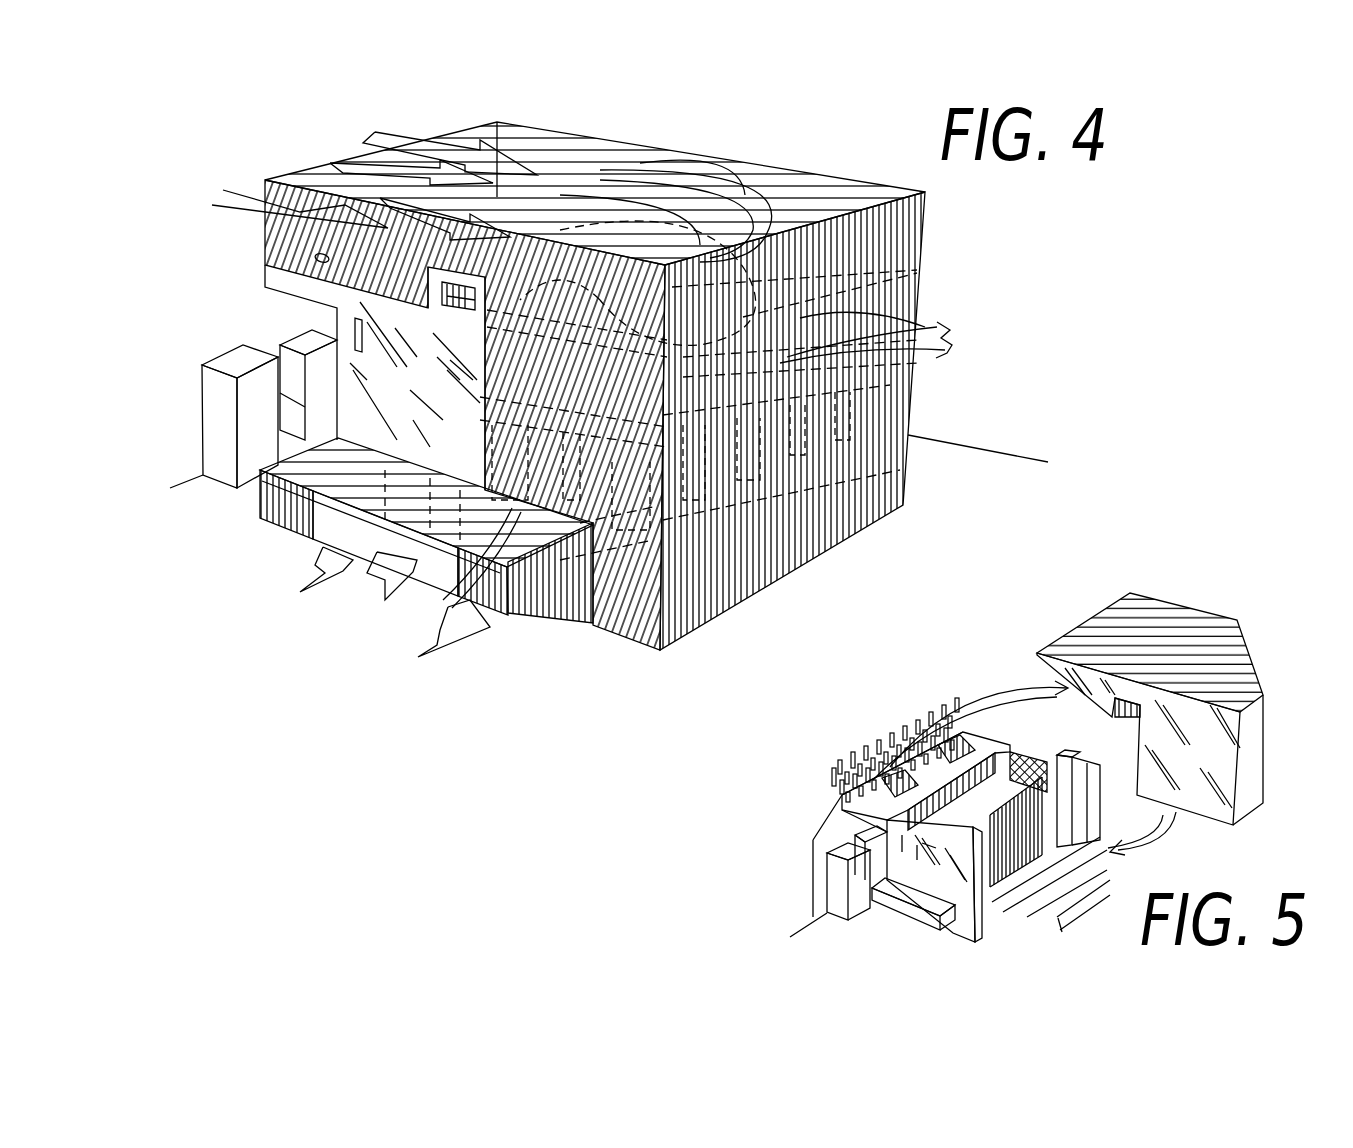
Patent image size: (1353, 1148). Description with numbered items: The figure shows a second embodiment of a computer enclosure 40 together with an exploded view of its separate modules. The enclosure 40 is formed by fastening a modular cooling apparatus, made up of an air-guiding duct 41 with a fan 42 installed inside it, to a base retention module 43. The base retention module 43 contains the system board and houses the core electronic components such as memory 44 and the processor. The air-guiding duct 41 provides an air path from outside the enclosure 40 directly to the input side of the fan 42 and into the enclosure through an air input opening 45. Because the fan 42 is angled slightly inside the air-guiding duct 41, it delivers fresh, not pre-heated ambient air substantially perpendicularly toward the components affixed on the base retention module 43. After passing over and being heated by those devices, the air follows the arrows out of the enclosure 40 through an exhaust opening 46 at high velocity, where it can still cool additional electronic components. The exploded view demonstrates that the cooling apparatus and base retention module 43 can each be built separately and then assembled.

In FIG. 4, the enclosure 40 is at (609, 370).
In FIG. 4, the air-guiding duct 41 is at (686, 163).
In FIG. 5, the air-guiding duct 41 is at (933, 692).
In FIG. 4, the fan 42 is at (802, 290).
In FIG. 4, the base retention module 43 is at (373, 413).
In FIG. 5, the base retention module 43 is at (883, 874).
In FIG. 4, the memory 44 is at (795, 348).
In FIG. 4, the air input opening 45 is at (265, 252).
In FIG. 4, the exhaust opening 46 is at (393, 517).